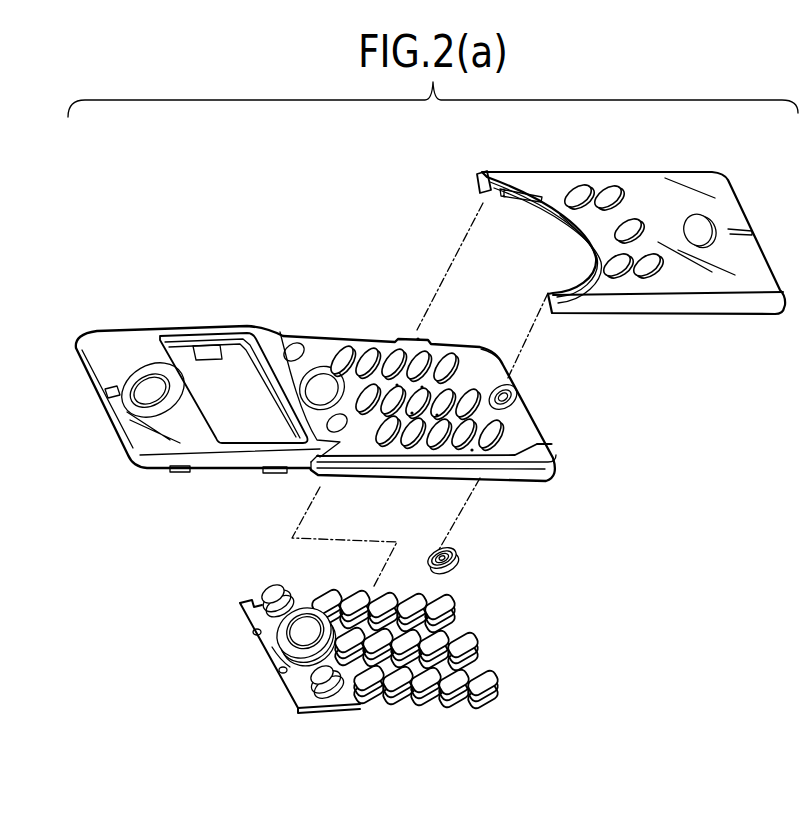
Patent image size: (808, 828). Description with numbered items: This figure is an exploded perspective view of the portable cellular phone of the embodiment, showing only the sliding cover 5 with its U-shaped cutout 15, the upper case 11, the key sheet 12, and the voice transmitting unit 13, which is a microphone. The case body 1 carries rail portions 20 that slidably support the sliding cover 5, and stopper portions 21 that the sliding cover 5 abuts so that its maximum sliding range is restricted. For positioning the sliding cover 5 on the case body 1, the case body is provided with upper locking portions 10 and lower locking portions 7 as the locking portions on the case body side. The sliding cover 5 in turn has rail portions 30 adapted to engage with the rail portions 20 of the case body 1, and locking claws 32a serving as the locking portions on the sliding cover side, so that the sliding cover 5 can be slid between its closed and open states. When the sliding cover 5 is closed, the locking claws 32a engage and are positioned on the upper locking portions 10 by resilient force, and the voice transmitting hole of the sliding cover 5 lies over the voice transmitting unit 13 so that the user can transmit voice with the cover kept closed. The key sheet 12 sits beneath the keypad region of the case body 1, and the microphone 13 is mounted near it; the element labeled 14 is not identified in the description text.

The case body 1 is at (262, 337).
The sliding cover 5 is at (640, 183).
The lower locking portions 7 is at (418, 338).
The upper locking portions 10 is at (318, 473).
The upper case 11 is at (135, 338).
The key sheet 12 is at (343, 698).
The voice transmitting unit 13 is at (458, 560).
The boss 14 is at (514, 398).
The U-shaped cutout 15 is at (572, 228).
The rail portions 20 is at (410, 467).
The stopper portions 21 is at (488, 353).
The rail portions 30 is at (513, 199).
The locking claws 32a is at (477, 183).